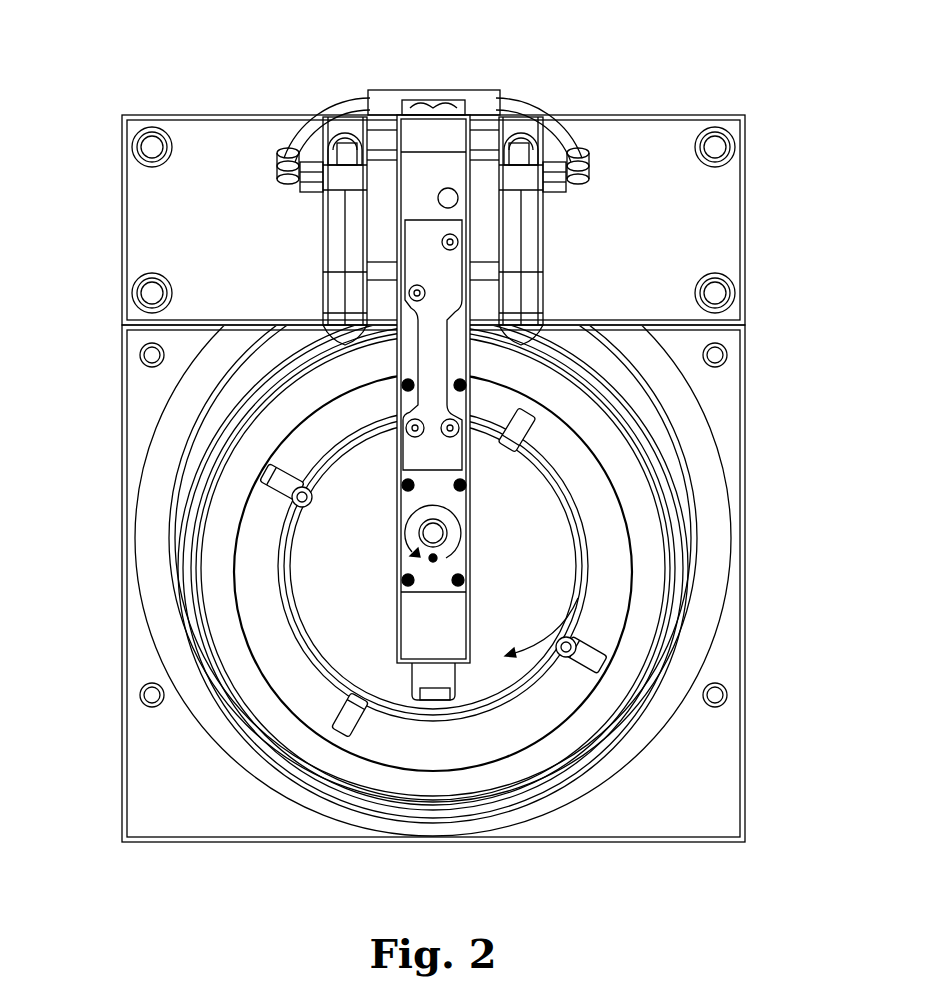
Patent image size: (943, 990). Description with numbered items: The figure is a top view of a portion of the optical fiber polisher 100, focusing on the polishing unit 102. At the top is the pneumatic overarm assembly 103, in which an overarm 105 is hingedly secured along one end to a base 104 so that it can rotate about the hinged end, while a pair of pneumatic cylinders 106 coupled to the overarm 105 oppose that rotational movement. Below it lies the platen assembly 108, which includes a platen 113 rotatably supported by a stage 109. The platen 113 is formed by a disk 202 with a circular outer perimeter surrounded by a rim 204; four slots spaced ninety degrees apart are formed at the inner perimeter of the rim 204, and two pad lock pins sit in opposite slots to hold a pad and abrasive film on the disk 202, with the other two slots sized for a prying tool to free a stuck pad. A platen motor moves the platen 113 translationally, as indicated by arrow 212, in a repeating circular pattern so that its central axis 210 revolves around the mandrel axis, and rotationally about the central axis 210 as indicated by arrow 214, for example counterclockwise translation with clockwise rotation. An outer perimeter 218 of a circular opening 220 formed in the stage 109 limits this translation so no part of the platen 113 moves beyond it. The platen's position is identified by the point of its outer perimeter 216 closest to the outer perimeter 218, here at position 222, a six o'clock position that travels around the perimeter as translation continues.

The optical fiber polisher 100 is at (205, 71).
The polishing unit 102 is at (108, 375).
The pneumatic overarm assembly 103 is at (385, 392).
The base 104 is at (150, 200).
The overarm 105 is at (362, 378).
The pneumatic cylinders 106 is at (320, 237).
The platen assembly 108 is at (668, 446).
The stage 109 is at (708, 792).
The platen 113 is at (645, 510).
The disk 202 is at (328, 565).
The rim 204 is at (258, 612).
The central axis 210 is at (434, 562).
The arrow 212 is at (468, 537).
The arrow 214 is at (590, 590).
The outer perimeter 216 is at (228, 665).
The outer perimeter 218 is at (200, 738).
The circular opening 220 is at (232, 755).
The position 222 is at (430, 834).